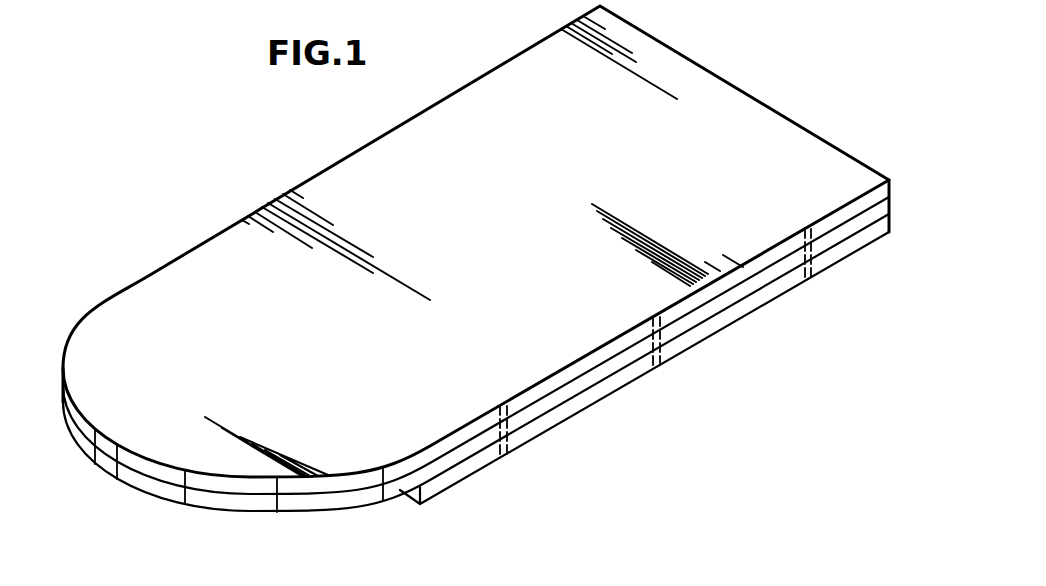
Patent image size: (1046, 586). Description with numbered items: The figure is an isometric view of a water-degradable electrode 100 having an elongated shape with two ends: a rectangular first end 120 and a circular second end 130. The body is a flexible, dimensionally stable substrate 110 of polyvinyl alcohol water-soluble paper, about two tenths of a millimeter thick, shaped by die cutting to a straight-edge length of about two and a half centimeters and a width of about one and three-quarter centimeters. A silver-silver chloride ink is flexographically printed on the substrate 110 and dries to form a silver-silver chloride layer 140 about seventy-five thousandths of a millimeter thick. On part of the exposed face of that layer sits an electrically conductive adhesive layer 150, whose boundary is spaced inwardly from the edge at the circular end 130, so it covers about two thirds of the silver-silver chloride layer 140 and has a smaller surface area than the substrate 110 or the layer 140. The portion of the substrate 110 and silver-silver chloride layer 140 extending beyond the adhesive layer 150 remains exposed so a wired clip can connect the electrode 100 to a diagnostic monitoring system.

The electrode 100 is at (456, 286).
The substrate 110 is at (95, 430).
The first end 120 is at (752, 95).
The second end 130 is at (66, 348).
The silver-silver chloride layer 140 is at (263, 505).
The electrically conductive adhesive layer 150 is at (438, 485).